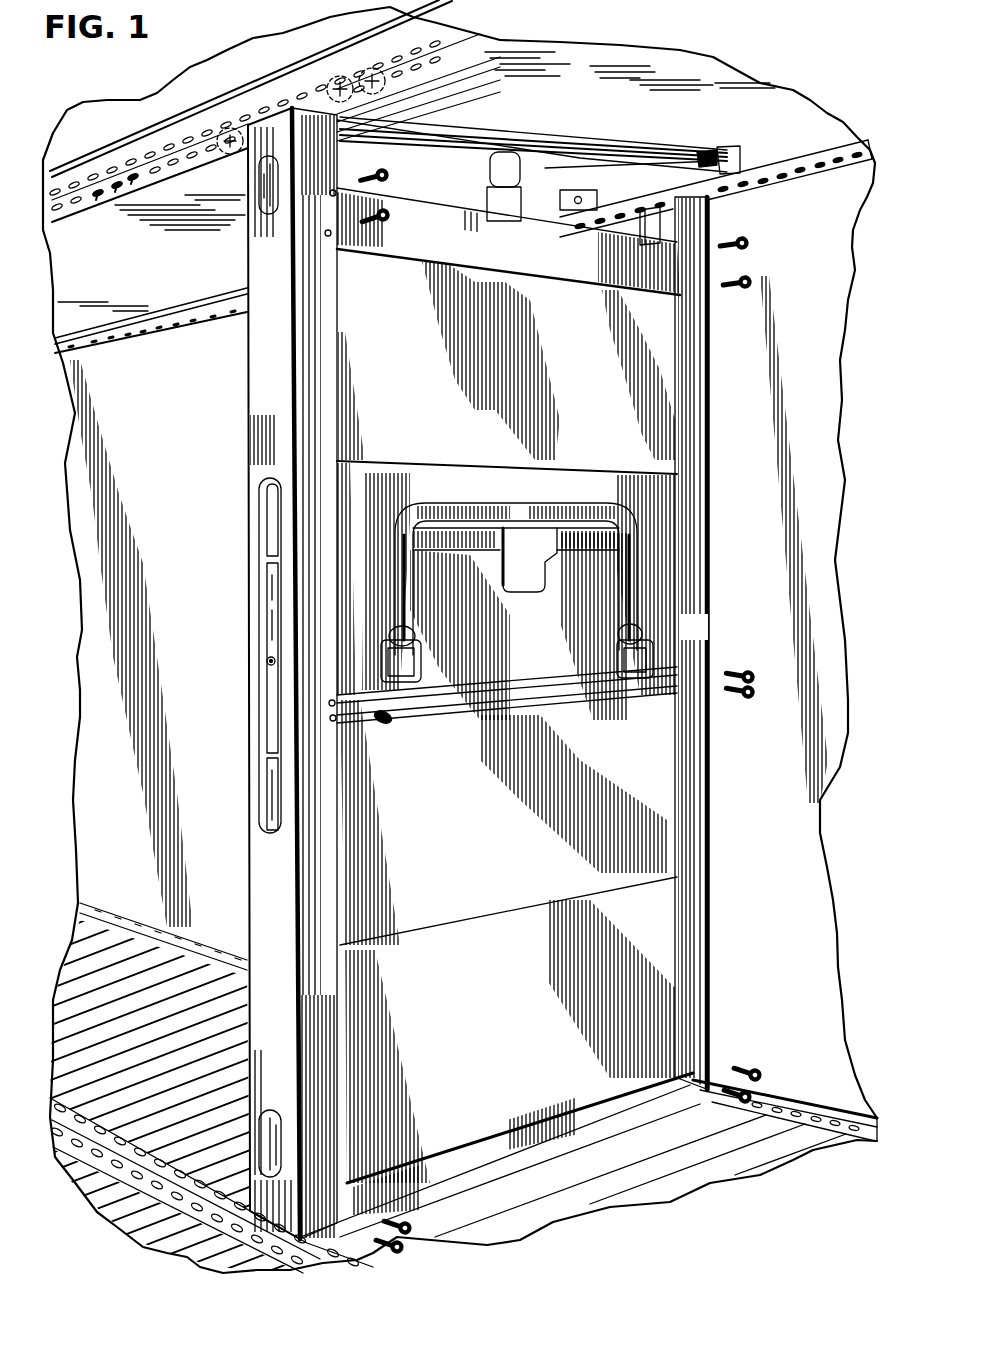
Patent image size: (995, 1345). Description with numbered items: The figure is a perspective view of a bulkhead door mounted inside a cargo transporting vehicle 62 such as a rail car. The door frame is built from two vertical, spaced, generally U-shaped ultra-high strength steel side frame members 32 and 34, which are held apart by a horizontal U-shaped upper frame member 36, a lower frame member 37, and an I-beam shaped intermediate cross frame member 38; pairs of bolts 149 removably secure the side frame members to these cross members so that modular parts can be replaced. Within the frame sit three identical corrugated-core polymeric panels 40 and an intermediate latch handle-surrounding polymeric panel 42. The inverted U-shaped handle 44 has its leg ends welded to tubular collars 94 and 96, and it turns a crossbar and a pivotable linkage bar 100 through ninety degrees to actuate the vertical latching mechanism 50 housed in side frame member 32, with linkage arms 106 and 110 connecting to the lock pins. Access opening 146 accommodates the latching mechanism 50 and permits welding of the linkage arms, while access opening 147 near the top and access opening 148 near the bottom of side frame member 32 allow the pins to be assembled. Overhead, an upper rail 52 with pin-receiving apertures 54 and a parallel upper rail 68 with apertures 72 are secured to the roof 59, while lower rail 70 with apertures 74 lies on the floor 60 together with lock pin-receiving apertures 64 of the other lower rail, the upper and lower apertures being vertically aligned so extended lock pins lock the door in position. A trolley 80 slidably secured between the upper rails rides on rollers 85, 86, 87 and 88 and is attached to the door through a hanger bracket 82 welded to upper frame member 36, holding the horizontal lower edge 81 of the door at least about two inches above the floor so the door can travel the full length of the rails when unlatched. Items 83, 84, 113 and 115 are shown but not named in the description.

The side frame member 32 is at (248, 376).
The side frame member 34 is at (692, 643).
The upper frame member 36 is at (539, 269).
The lower frame member 37 is at (576, 1128).
The intermediate cross frame member 38 is at (650, 690).
The polymeric panels 40 is at (548, 371).
The latch handle-surrounding polymeric panel 42 is at (571, 501).
The handle 44 is at (638, 517).
The latching mechanism 50 is at (263, 632).
The upper rail 52 is at (175, 174).
The pin-receiving apertures 54 is at (132, 184).
The roof 59 is at (634, 110).
The floor 60 is at (546, 1186).
The cargo transporting vehicle 62 is at (227, 82).
The lock pin-receiving apertures 64 is at (333, 1260).
The upper rail 68 is at (783, 168).
The lower rail 70 is at (800, 1104).
The apertures 72 is at (725, 196).
The apertures 74 is at (797, 1118).
The trolley 80 is at (577, 155).
The lower edge 81 is at (596, 1126).
The hanger bracket 82 is at (472, 230).
The channel flange 83 is at (458, 84).
The spacer block 84 is at (662, 207).
The roller 85 is at (415, 97).
The roller 86 is at (215, 138).
The roller 87 is at (706, 150).
The roller 88 is at (590, 190).
The tubular collar 94 is at (381, 665).
The tubular collar 96 is at (618, 660).
The pivotable linkage bar 100 is at (266, 672).
The linkage arm 106 is at (273, 1110).
The linkage arm 110 is at (262, 182).
The lower perforated strip 113 is at (185, 1257).
The fasteners 115 is at (308, 110).
The access opening 146 is at (262, 703).
The access opening 147 is at (262, 213).
The access opening 148 is at (283, 1152).
The bolts 149 is at (378, 212).